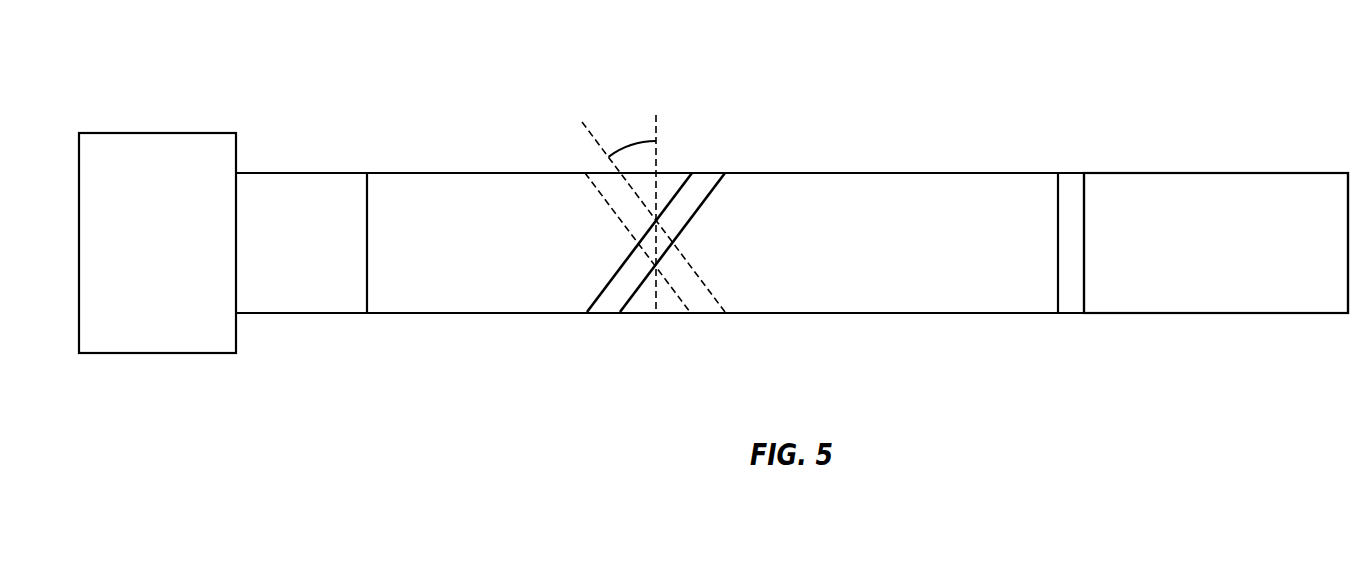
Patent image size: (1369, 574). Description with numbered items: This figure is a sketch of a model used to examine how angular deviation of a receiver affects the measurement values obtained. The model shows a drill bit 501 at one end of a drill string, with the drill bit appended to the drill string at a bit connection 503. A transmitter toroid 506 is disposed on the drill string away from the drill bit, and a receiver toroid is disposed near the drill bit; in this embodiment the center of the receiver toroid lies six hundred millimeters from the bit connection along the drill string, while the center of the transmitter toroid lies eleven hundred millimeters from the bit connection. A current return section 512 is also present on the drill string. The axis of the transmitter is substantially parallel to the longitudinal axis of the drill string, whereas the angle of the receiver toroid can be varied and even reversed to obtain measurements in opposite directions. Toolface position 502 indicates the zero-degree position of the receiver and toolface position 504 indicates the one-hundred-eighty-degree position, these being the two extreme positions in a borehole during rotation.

The drill bit 501 is at (107, 132).
The toolface position 502 is at (608, 303).
The bit connection 503 is at (638, 143).
The toolface position 504 is at (708, 303).
The transmitter toroid 506 is at (1072, 305).
The current return section 512 is at (1222, 314).